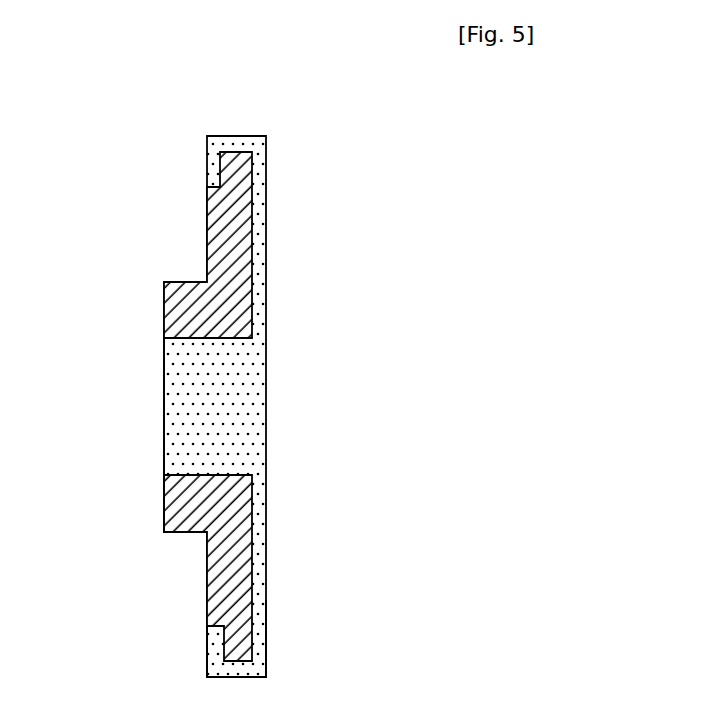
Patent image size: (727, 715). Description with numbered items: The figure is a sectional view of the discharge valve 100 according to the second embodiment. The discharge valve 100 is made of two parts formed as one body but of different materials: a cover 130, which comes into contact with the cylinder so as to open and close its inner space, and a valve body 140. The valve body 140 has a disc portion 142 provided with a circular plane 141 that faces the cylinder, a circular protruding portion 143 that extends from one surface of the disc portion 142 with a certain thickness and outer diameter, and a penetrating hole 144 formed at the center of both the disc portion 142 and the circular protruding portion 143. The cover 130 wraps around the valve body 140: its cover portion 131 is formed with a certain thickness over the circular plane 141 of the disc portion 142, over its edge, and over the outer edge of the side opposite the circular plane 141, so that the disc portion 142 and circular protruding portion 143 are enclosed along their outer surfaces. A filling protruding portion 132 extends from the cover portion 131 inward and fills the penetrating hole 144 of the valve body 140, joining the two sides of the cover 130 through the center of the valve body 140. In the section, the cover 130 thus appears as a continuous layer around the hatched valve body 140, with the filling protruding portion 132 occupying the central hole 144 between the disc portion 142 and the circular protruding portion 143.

The discharge valve 100 is at (252, 108).
The cover 130 is at (296, 209).
The cover portion 131 is at (267, 635).
The filling protruding portion 132 is at (183, 428).
The valve body 140 is at (157, 268).
The circular plane 141 is at (266, 287).
The disc portion 142 is at (232, 565).
The circular protruding portion 143 is at (183, 508).
The penetrating hole 144 is at (252, 463).